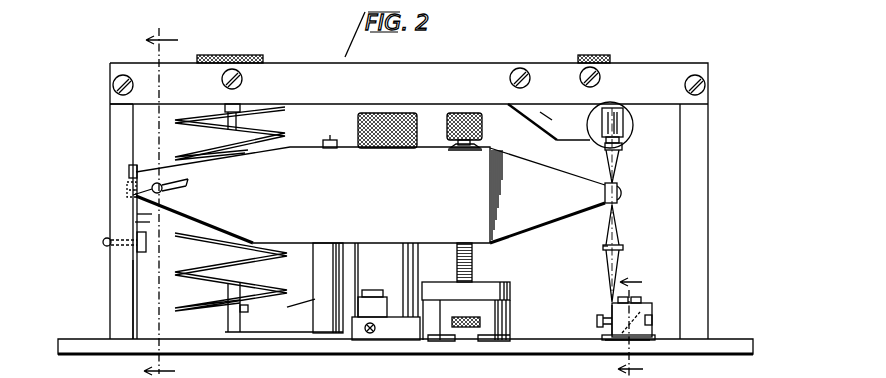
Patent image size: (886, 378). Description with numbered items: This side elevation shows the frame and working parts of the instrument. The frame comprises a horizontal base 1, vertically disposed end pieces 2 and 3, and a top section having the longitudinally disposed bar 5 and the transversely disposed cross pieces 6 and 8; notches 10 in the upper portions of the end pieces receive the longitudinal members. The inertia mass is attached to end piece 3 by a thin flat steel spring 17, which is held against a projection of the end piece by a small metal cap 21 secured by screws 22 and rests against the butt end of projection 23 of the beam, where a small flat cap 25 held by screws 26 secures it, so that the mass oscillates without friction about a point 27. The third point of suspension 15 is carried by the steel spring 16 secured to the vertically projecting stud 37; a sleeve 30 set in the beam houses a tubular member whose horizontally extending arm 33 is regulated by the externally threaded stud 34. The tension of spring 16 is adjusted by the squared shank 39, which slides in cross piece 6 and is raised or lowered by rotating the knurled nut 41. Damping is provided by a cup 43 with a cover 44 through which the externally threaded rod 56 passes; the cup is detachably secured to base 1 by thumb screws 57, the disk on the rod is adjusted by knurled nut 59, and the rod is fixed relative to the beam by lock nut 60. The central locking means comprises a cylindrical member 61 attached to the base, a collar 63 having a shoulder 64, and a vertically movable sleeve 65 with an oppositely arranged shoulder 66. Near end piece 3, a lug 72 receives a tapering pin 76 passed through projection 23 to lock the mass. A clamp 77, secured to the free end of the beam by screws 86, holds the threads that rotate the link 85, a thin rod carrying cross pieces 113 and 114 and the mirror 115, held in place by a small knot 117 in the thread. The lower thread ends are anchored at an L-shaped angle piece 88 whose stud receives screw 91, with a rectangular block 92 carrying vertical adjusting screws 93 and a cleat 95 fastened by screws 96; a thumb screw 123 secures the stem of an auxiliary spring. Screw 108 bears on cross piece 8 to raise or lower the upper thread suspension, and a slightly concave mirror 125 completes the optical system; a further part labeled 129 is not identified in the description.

The horizontal base 1 is at (73, 347).
The end piece 2 is at (703, 160).
The end piece 3 is at (111, 134).
The longitudinally disposed bar 5 is at (314, 70).
The cross piece 6 is at (161, 200).
The cross piece 8 is at (630, 321).
The notches 10 is at (157, 52).
The third point of suspension 15 is at (240, 305).
The steel spring 16 is at (200, 278).
The thin flat steel spring 17 is at (133, 276).
The small metal cap 21 is at (146, 245).
The screws 22 is at (103, 242).
The projection 23 is at (158, 218).
The small flat cap 25 is at (129, 183).
The screws 26 is at (127, 191).
The point 27 is at (134, 222).
The sleeve 30 is at (320, 243).
The horizontally extending arm 33 is at (290, 310).
The externally threaded stud 34 is at (316, 132).
The vertically projecting stud 37 is at (230, 283).
The squared shank 39 is at (242, 123).
The knurled nut 41 is at (230, 46).
The cup 43 is at (510, 308).
The cover 44 is at (508, 286).
The rod 56 is at (479, 262).
The thumb screws 57 is at (480, 322).
The knurled nut 59 is at (459, 113).
The lock nut 60 is at (481, 146).
The cylindrical member 61 is at (398, 312).
The collar 63 is at (393, 340).
The shoulder 64 is at (387, 310).
The vertically movable sleeve 65 is at (368, 245).
The shoulder 66 is at (392, 288).
The lug 72 is at (143, 178).
The tapering pin 76 is at (190, 188).
The clamp 77 is at (620, 186).
The link 85 is at (618, 162).
The screws 86 is at (626, 194).
The L-shaped angle piece 88 is at (650, 341).
The screw 91 is at (642, 300).
The rectangular block 92 is at (636, 311).
The vertical adjusting screws 93 is at (612, 345).
The cleat 95 is at (612, 312).
The screws 96 is at (653, 318).
The screw 108 is at (591, 55).
The cross piece 113 is at (603, 248).
The cross piece 114 is at (596, 146).
The mirror 115 is at (625, 117).
The small knot 117 is at (624, 248).
The thumb screw 123 is at (597, 321).
The slightly concave mirror 125 is at (628, 131).
The shield 129 is at (552, 118).